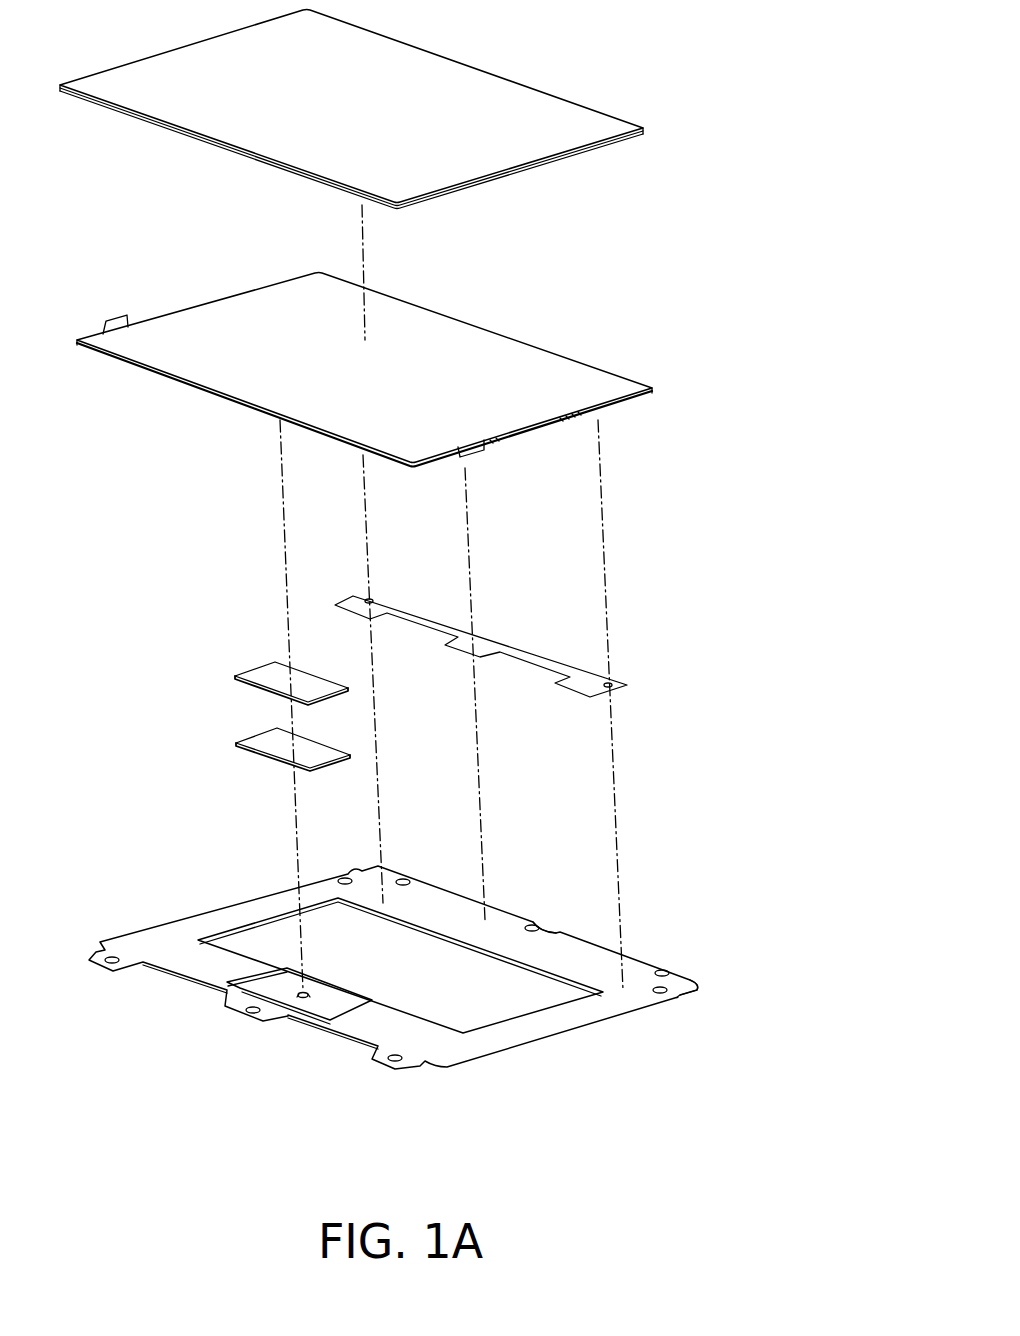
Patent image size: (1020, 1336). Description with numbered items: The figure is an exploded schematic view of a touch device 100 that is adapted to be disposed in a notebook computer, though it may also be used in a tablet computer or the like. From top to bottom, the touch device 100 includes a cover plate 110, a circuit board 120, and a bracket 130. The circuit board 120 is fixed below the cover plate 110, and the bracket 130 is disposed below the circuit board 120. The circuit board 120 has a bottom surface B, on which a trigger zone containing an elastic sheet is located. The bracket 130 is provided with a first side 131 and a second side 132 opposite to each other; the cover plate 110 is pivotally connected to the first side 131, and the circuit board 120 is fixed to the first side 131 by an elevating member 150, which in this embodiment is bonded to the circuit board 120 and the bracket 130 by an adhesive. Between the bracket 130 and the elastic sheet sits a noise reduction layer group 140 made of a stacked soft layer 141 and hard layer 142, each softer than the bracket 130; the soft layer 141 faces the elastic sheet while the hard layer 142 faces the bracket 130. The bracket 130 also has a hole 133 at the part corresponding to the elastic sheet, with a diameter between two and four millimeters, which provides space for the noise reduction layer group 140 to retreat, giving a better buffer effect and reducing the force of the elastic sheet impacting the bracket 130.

The touch device 100 is at (740, 1167).
The cover plate 110 is at (555, 110).
The circuit board 120 is at (590, 382).
The bracket 130 is at (637, 967).
The first side 131 is at (540, 897).
The second side 132 is at (172, 990).
The hole 133 is at (308, 992).
The noise reduction layer group 140 is at (150, 640).
The soft layer 141 is at (257, 673).
The hard layer 142 is at (260, 740).
The elevating member 150 is at (597, 679).
The bottom surface B is at (180, 382).